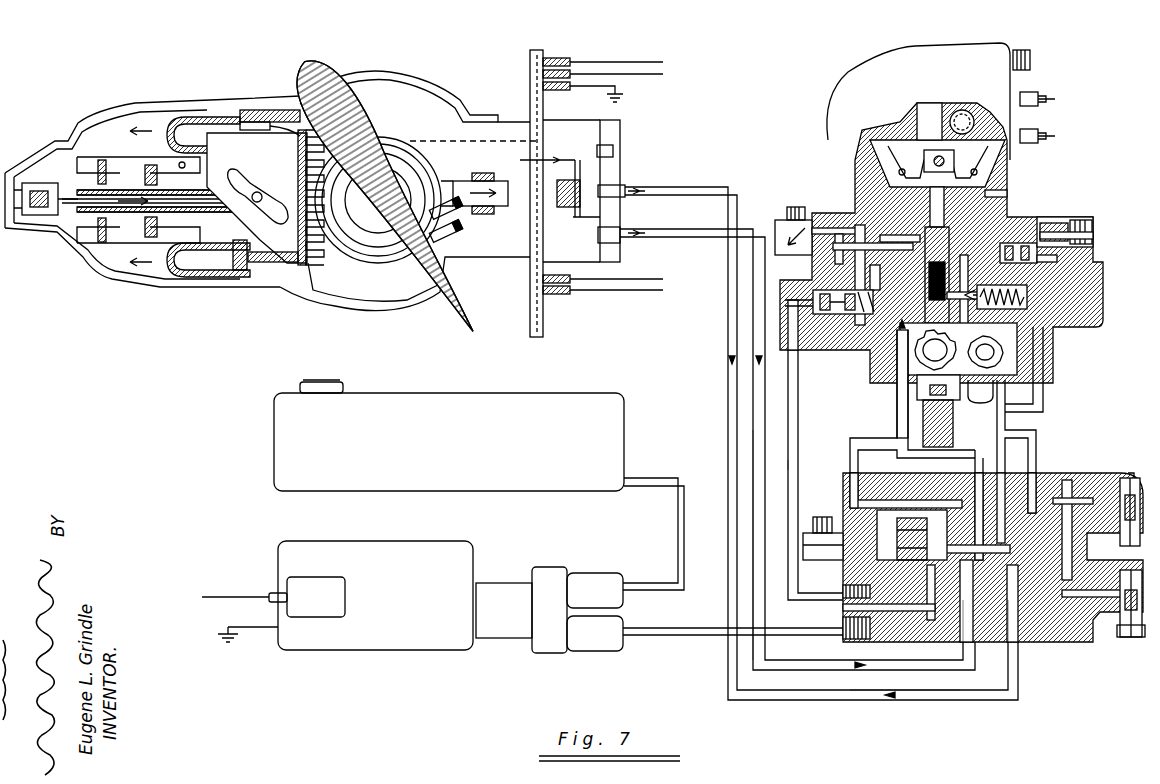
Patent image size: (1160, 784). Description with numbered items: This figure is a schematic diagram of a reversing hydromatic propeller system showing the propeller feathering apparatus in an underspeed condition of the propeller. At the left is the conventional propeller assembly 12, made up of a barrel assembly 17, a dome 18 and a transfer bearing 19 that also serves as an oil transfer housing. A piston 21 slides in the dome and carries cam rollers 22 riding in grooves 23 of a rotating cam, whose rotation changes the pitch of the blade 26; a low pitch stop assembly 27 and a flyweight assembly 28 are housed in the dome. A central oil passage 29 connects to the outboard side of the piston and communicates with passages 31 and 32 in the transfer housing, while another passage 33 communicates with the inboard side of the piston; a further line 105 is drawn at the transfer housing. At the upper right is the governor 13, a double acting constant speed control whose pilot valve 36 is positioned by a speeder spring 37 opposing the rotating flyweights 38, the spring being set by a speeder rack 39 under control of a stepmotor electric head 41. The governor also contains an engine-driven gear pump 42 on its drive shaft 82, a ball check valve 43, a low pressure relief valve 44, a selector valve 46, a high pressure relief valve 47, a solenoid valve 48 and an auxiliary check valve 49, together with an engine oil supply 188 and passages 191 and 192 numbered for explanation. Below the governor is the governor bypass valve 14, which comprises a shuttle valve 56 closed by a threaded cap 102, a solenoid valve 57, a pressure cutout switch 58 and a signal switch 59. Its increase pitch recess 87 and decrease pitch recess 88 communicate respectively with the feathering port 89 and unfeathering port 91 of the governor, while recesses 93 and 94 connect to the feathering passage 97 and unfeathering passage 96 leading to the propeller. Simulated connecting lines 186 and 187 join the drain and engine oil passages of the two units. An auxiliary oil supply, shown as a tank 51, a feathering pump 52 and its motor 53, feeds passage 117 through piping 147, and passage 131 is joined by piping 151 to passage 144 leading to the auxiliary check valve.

The propeller assembly 12 is at (396, 67).
The governor 13 is at (828, 76).
The governor bypass valve 14 is at (1079, 652).
The barrel assembly 17 is at (447, 97).
The dome 18 is at (112, 288).
The transfer bearing 19 is at (600, 125).
The piston 21 is at (171, 117).
The cam rollers 22 is at (232, 133).
The grooves 23 is at (245, 182).
The blade 26 is at (320, 70).
The low pitch stop assembly 27 is at (147, 158).
The flyweight assembly 28 is at (33, 183).
The oil passage 29 is at (105, 208).
The passage 31 is at (466, 182).
The passage 32 is at (567, 237).
The passage 33 is at (555, 162).
The pilot valve 36 is at (940, 206).
The speeder spring 37 is at (880, 143).
The rotating flyweights 38 is at (905, 158).
The speeder rack 39 is at (925, 118).
The stepmotor electric head 41 is at (838, 85).
The gear pump 42 is at (1005, 356).
The ball check valve 43 is at (965, 330).
The low pressure relief valve 44 is at (1027, 300).
The selector valve 46 is at (1045, 261).
The high pressure relief valve 47 is at (1065, 224).
The solenoid valve 48 is at (780, 230).
The auxiliary check valve 49 is at (836, 318).
The tank 51 is at (285, 490).
The auxiliary pump 52 is at (550, 654).
The motor 53 is at (415, 650).
The shuttle valve 56 is at (1064, 495).
The solenoid valve 57 is at (815, 540).
The pressure cutout switch 58 is at (1122, 545).
The signal switch 59 is at (1132, 640).
The drive shaft 82 is at (956, 420).
The arcuate recess 87 is at (972, 464).
The arcuate recess 88 is at (1003, 470).
The increase pitch port 89 is at (1040, 384).
The decrease pitch port 91 is at (892, 412).
The recess 93 is at (968, 647).
The recess 94 is at (1022, 647).
The unfeathering passage 96 is at (940, 700).
The feathering passage 97 is at (787, 670).
The threaded cap 102 is at (1033, 235).
The conduit 105 is at (632, 234).
The passage 117 is at (843, 628).
The passage 131 is at (843, 593).
The passage 144 is at (790, 352).
The piping 147 is at (698, 632).
The piping 151 is at (792, 462).
The simulated connecting line 186 is at (855, 462).
The simulated connecting line 187 is at (1032, 466).
The engine oil supply 188 is at (990, 396).
The passage 191 is at (875, 380).
The passage 192 is at (975, 242).